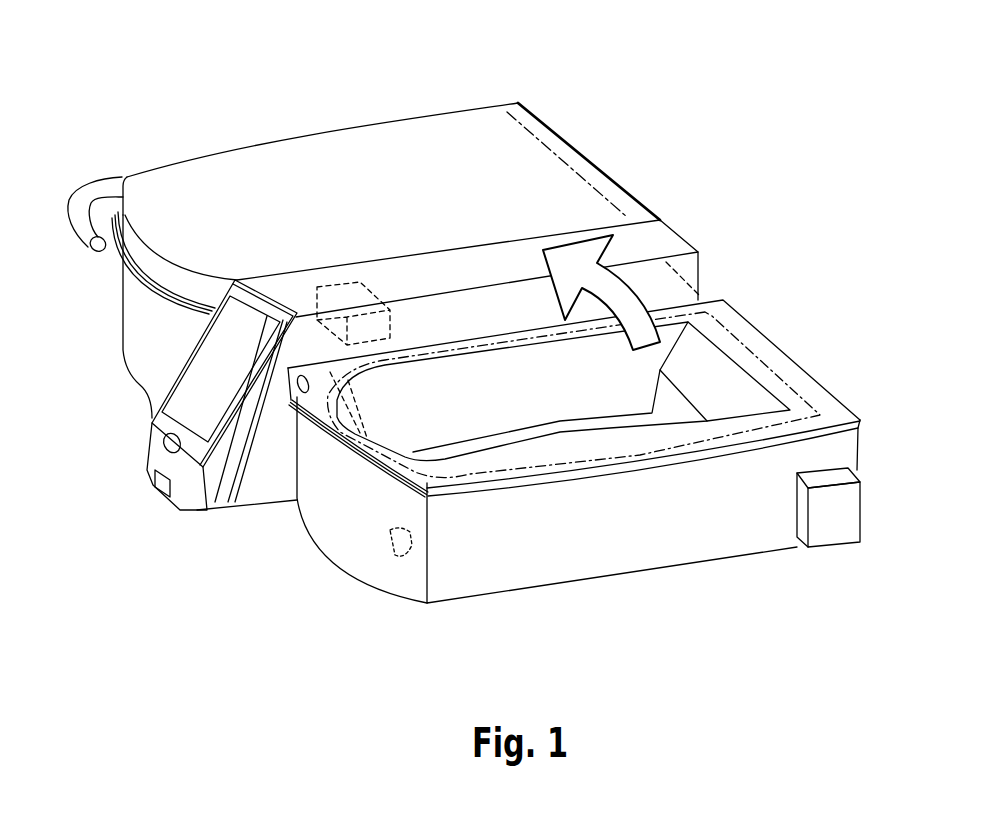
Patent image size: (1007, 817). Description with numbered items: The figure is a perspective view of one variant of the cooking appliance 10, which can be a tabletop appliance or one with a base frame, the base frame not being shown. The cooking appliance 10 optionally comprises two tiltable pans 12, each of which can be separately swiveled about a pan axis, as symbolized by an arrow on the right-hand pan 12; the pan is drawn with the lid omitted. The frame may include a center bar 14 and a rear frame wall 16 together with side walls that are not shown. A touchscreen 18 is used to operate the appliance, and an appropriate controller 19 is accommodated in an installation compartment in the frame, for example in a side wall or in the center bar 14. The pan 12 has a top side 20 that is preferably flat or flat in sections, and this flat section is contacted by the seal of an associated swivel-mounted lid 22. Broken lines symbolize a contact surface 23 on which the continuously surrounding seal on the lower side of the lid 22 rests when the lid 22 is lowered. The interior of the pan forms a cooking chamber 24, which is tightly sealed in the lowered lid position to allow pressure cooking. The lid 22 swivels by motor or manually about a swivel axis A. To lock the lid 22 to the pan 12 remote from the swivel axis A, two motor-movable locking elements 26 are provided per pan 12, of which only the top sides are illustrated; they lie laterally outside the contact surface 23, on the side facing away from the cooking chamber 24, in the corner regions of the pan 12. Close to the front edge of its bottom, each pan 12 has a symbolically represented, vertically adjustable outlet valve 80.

The cooking appliance 10 is at (609, 120).
The pan 12 is at (127, 320).
The center bar 14 is at (667, 240).
The rear frame wall 16 is at (847, 508).
The touchscreen 18 is at (178, 374).
The controller 19 is at (197, 512).
The top side 20 is at (775, 367).
The lid 22 is at (350, 163).
The contact surface 23 is at (497, 463).
The cooking chamber 24 is at (532, 418).
The locking element 26 is at (290, 392).
The outlet valve 80 is at (388, 542).
The swivel axis A is at (523, 127).